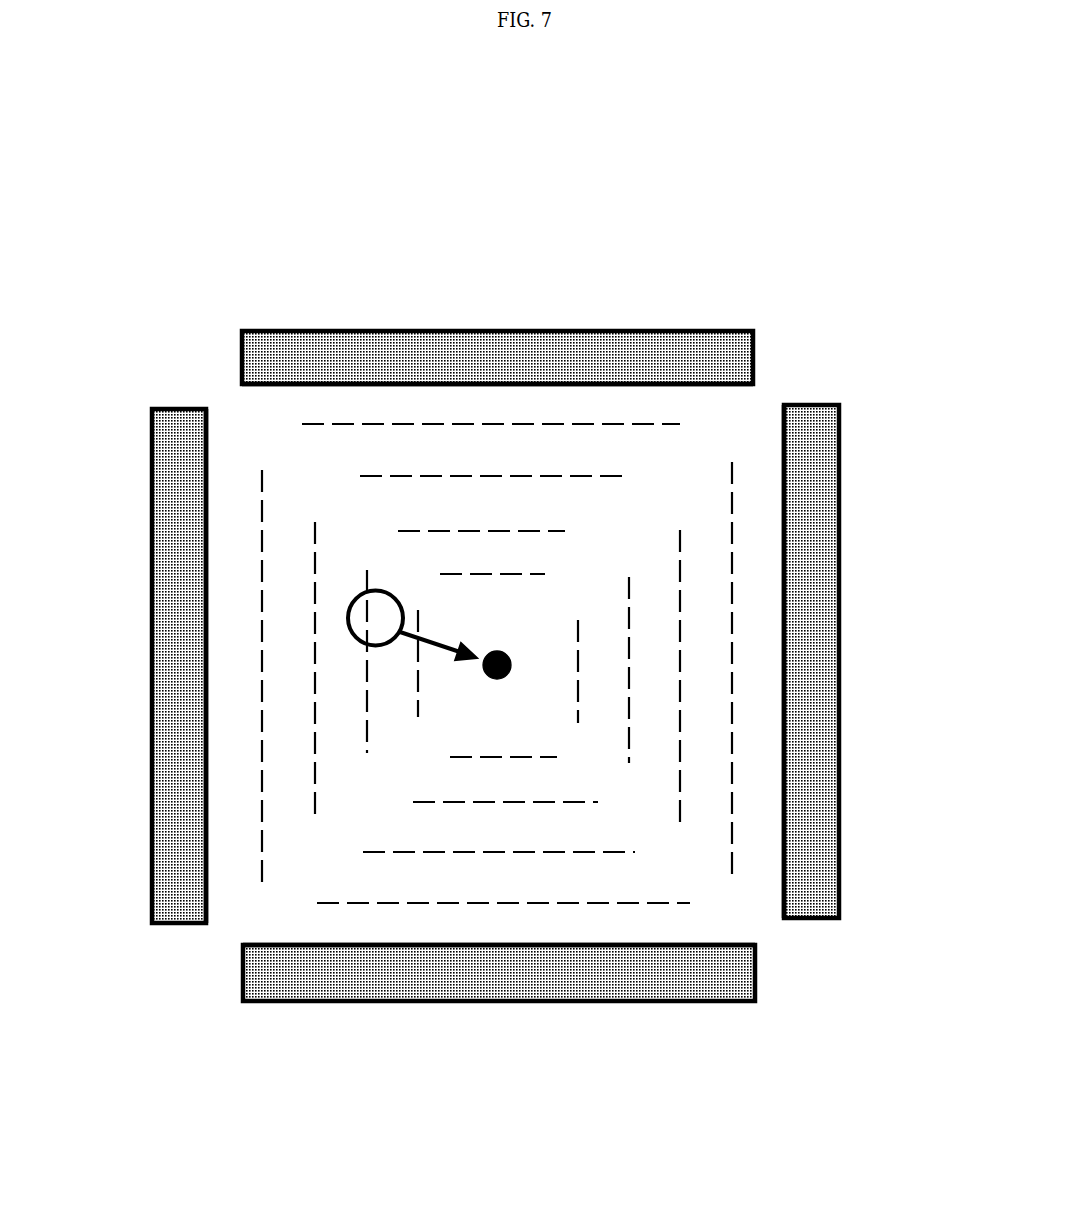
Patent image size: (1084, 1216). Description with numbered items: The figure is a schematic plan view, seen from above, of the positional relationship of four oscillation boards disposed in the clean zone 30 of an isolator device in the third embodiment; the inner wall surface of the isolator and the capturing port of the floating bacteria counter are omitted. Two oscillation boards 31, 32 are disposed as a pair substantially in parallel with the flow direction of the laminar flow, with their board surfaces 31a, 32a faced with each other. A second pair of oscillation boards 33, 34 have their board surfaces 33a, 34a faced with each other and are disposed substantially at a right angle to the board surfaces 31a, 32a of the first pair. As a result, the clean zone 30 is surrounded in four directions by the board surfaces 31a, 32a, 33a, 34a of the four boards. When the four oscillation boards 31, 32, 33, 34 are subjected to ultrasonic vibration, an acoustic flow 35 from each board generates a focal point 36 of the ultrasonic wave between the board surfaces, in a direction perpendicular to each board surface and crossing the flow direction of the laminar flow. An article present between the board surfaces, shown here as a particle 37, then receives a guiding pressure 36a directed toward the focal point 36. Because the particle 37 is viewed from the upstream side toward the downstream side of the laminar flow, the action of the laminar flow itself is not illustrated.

The clean zone 30 is at (818, 345).
The oscillation board 31 is at (182, 591).
The board surface 31a is at (210, 727).
The oscillation board 32 is at (817, 608).
The board surface 32a is at (786, 714).
The oscillation board 33 is at (488, 973).
The board surface 33a is at (402, 938).
The oscillation board 34 is at (478, 347).
The board surface 34a is at (398, 388).
The acoustic flow 35 is at (360, 903).
The focal point 36 is at (513, 664).
The guiding pressure 36a is at (441, 640).
The particle 37 is at (350, 597).